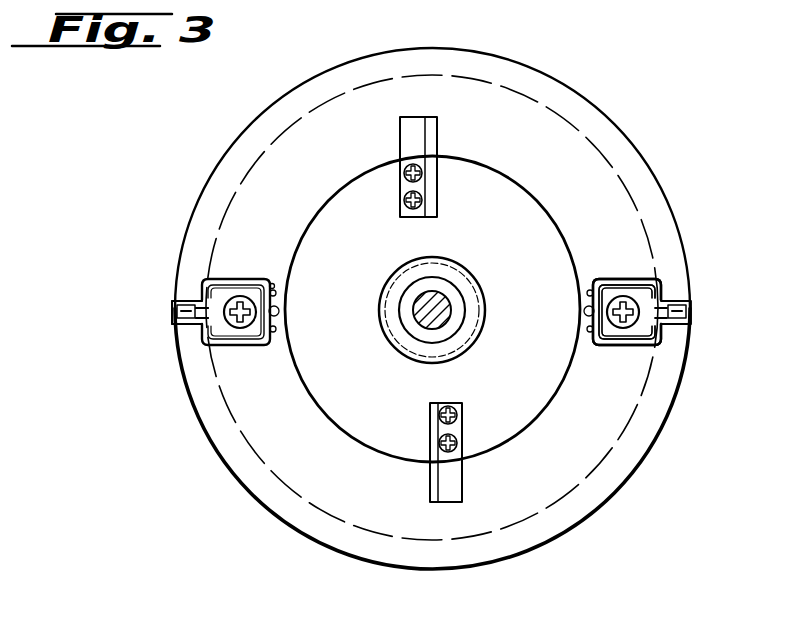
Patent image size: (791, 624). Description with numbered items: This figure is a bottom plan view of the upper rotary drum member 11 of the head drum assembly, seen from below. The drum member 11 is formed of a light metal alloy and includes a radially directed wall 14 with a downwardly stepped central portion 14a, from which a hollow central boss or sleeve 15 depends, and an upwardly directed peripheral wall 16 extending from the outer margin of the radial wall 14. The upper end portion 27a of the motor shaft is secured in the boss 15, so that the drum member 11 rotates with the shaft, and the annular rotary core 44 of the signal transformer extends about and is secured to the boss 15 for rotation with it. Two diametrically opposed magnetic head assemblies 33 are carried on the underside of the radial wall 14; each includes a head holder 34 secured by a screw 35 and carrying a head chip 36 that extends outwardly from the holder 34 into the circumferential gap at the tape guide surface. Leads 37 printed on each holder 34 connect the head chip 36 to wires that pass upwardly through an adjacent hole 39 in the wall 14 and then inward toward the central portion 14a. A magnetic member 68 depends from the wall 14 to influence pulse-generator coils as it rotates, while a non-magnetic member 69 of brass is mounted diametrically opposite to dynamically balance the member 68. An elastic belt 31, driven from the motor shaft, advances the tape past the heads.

The upper rotary drum member 11 is at (658, 147).
The radially directed wall 14 is at (560, 488).
The downwardly stepped central portion 14a is at (538, 400).
The hollow central boss or sleeve 15 is at (422, 336).
The upwardly directed peripheral wall 16 is at (655, 434).
The upper end portion of motor shaft 27a is at (446, 320).
The elastic belt 31 is at (217, 345).
The magnetic head assembly 33 is at (245, 277).
The head holder 34 is at (247, 350).
The screw 35 is at (273, 296).
The head chip 36 is at (176, 320).
The leads 37 is at (645, 280).
The hole 39 is at (280, 312).
The annular rotary core 44 is at (455, 278).
The magnetic member 68 is at (458, 471).
The non-magnetic member 69 is at (413, 146).